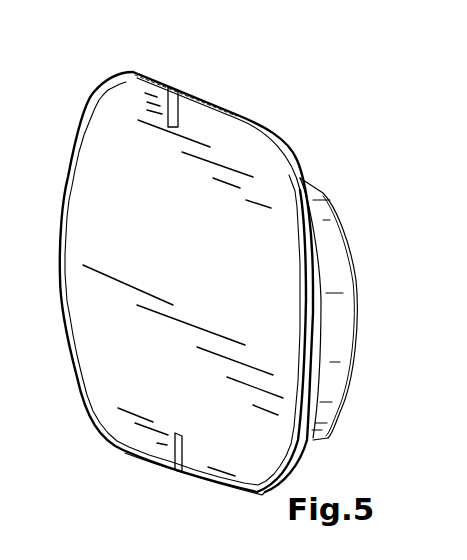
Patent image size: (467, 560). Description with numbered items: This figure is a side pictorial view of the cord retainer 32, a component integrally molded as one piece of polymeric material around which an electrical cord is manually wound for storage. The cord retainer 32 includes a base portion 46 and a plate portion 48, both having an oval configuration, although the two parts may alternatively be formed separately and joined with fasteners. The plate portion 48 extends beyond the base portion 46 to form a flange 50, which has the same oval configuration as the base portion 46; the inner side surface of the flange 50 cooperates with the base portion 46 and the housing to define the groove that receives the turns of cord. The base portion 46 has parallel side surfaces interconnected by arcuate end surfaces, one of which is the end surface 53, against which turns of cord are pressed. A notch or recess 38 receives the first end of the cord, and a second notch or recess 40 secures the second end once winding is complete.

The cord retainer 32 is at (303, 119).
The notch or recess 38 is at (180, 473).
The second notch or recess 40 is at (173, 89).
The base portion 46 is at (330, 237).
The plate portion 48 is at (95, 387).
The flange 50 is at (313, 267).
The arcuate end surface 53 is at (343, 332).